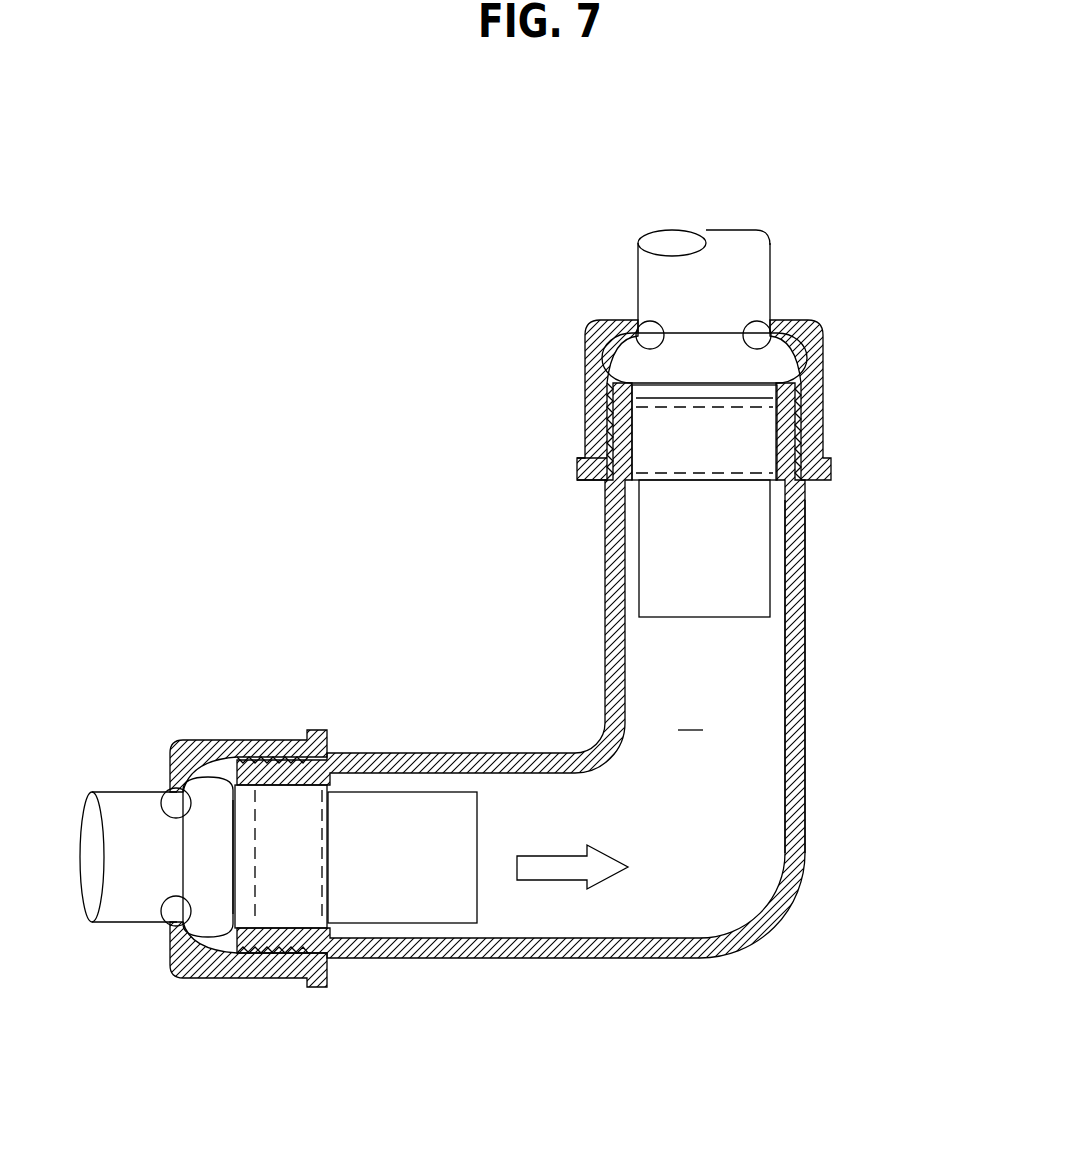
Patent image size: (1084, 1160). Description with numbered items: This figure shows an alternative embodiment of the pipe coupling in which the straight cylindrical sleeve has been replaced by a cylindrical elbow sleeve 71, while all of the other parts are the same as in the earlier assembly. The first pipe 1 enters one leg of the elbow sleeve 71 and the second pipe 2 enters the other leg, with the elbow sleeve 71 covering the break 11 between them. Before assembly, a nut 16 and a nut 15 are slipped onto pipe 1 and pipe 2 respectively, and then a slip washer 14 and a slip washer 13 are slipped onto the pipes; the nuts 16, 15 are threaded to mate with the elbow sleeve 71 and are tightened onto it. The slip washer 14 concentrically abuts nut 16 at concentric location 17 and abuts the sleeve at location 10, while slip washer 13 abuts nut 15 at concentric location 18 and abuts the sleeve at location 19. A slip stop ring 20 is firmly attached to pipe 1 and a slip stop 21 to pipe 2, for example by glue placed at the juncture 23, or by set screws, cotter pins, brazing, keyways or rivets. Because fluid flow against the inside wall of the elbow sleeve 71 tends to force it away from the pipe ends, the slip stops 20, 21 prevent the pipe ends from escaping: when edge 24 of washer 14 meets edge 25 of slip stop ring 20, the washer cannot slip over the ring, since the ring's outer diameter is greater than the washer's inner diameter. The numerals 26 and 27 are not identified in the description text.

The pipe 1 is at (110, 922).
The pipe 2 is at (770, 253).
The location 10 is at (635, 390).
The break 11 is at (521, 670).
The slip washer 13 is at (753, 322).
The slip washer 14 is at (165, 920).
The nut 15 is at (820, 432).
The nut 16 is at (273, 980).
The concentric location 17 is at (152, 805).
The concentric location 18 is at (660, 322).
The location 19 is at (193, 750).
The slip stop ring 20 is at (295, 857).
The slip stop 21 is at (607, 470).
The juncture 23 is at (737, 480).
The edge 24 is at (258, 830).
The edge 25 is at (240, 893).
The insert sleeve 26 is at (740, 400).
The thread 27 is at (610, 408).
The elbow sleeve 71 is at (803, 713).